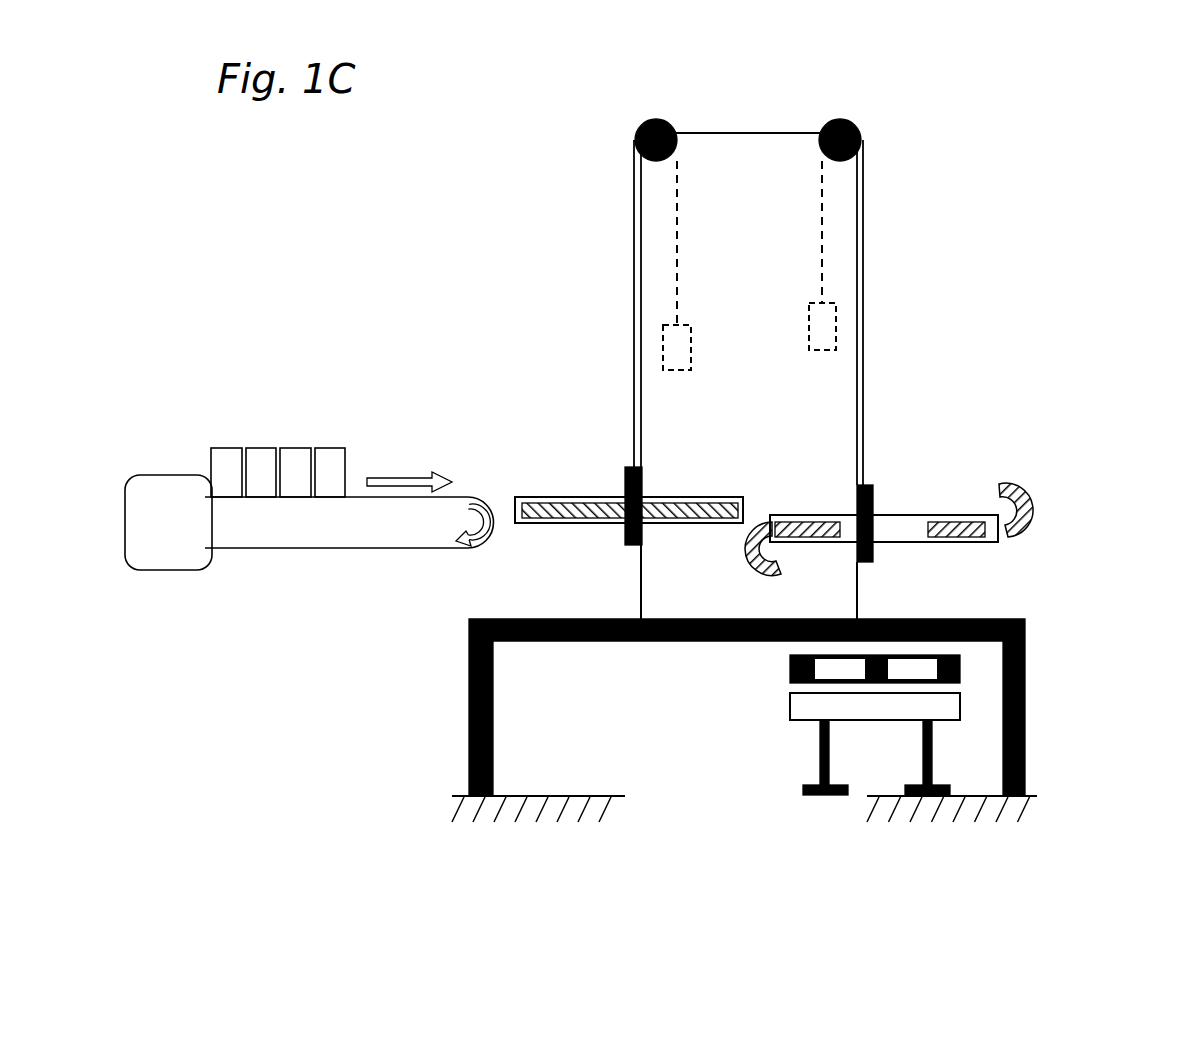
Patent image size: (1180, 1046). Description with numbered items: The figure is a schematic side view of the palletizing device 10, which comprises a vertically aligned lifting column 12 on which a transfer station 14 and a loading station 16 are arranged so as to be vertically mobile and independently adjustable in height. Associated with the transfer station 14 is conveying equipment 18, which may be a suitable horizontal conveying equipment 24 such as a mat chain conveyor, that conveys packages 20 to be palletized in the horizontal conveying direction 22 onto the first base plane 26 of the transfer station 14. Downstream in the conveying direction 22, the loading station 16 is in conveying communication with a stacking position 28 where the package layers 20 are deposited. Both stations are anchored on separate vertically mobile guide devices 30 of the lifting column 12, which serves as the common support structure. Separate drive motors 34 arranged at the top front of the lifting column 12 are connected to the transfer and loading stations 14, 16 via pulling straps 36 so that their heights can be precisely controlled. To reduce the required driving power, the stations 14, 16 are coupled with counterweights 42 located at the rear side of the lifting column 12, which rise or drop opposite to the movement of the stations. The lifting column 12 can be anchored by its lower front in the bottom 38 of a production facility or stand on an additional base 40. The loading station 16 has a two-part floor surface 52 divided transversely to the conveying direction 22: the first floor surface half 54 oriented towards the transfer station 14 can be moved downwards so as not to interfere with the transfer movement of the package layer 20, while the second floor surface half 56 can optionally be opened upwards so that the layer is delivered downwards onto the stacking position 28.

The palletizing device 10 is at (930, 153).
The lifting column 12 is at (766, 285).
The transfer station 14 is at (545, 535).
The loading station 16 is at (1052, 463).
The conveying equipment 18 is at (355, 565).
The package 20 is at (330, 458).
The conveying direction 22 is at (413, 478).
The horizontal conveying equipment 24 is at (237, 542).
The first base plane 26 is at (550, 492).
The stacking position 28 is at (867, 770).
The guide device 30 is at (625, 468).
The drive motor 34 is at (832, 127).
The pulling straps 36 is at (632, 238).
The bottom 38 is at (1022, 811).
The base 40 is at (1025, 643).
The counterweight 42 is at (809, 333).
The two-part floor surface 52 is at (1009, 483).
The first floor surface half 54 is at (812, 532).
The second floor surface half 56 is at (1020, 527).